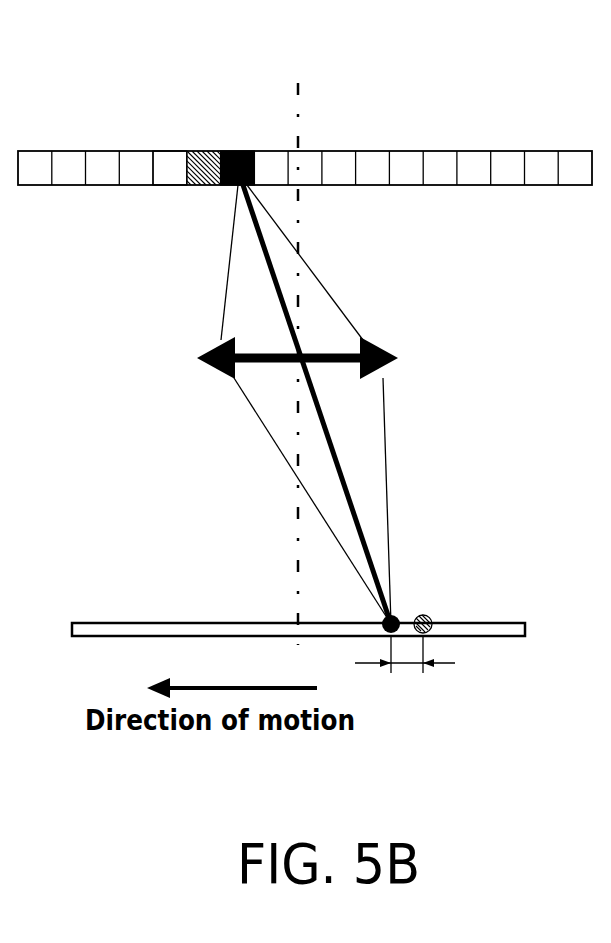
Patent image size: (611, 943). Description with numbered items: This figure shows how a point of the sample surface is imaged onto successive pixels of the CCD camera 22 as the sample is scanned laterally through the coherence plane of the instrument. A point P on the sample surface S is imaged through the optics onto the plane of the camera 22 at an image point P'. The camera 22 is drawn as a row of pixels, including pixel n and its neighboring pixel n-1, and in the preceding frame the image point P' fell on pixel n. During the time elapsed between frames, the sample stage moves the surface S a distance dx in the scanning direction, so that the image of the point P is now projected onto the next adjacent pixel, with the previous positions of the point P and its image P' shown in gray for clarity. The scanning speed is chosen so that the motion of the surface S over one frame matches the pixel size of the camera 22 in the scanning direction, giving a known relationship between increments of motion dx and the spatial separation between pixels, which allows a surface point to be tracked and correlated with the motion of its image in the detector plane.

The CCD camera 22 is at (473, 151).
The pixel n is at (201, 153).
The pixel n-1 is at (165, 138).
The image point P' is at (278, 404).
The sample surface S is at (143, 623).
The point P is at (430, 576).
The distance dx is at (398, 663).